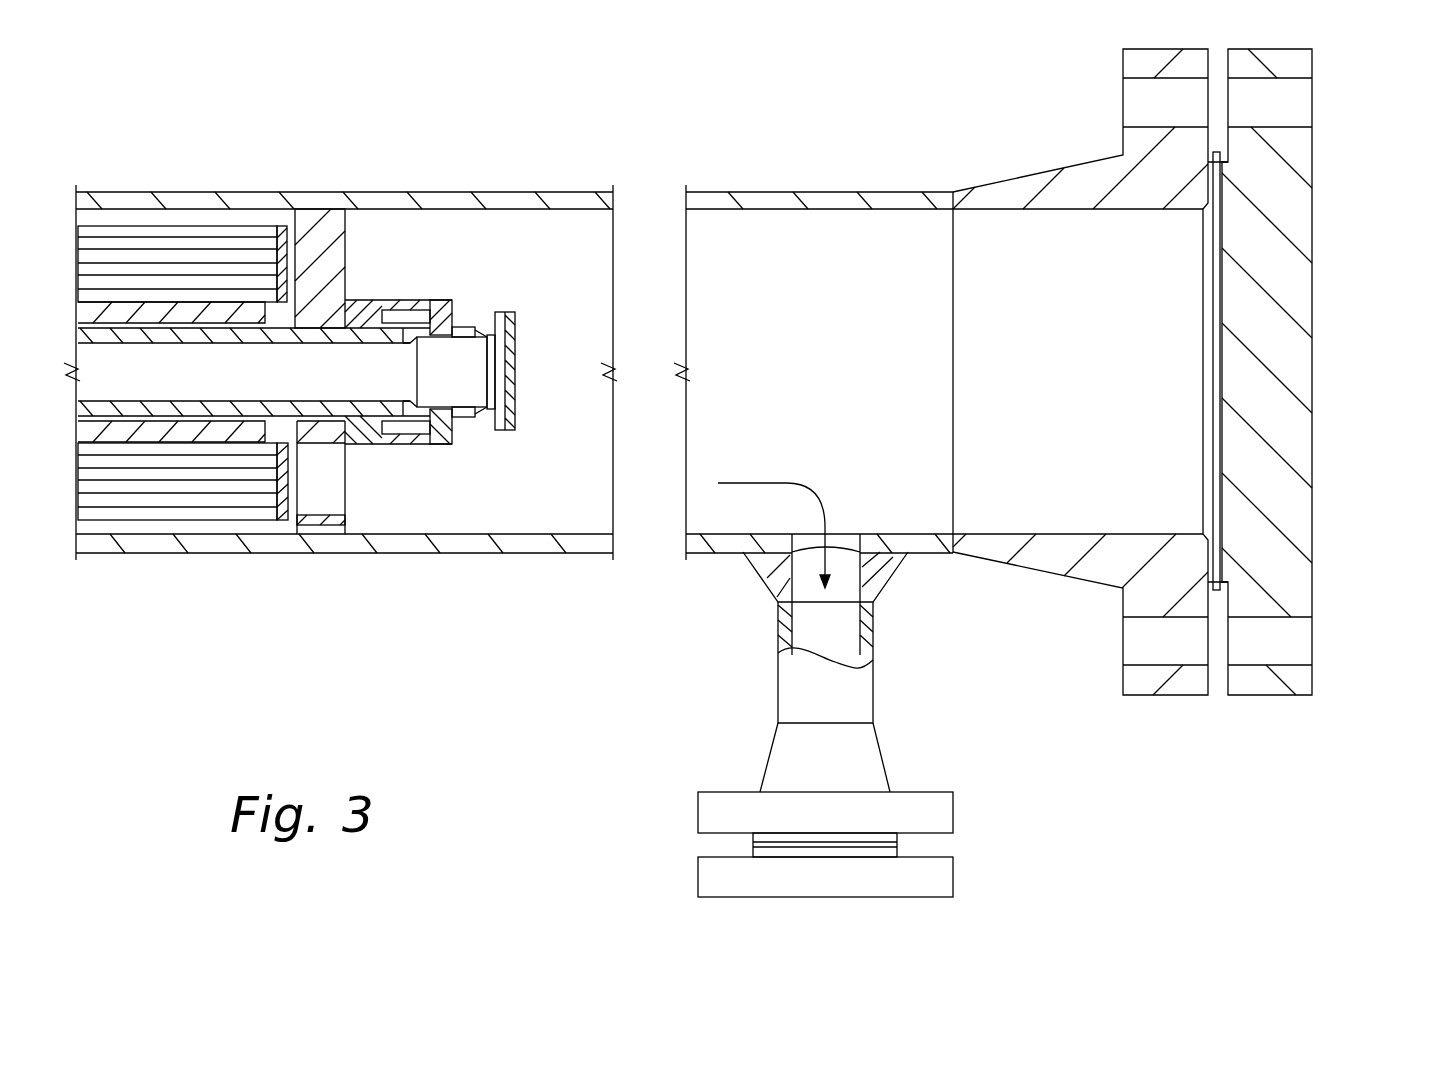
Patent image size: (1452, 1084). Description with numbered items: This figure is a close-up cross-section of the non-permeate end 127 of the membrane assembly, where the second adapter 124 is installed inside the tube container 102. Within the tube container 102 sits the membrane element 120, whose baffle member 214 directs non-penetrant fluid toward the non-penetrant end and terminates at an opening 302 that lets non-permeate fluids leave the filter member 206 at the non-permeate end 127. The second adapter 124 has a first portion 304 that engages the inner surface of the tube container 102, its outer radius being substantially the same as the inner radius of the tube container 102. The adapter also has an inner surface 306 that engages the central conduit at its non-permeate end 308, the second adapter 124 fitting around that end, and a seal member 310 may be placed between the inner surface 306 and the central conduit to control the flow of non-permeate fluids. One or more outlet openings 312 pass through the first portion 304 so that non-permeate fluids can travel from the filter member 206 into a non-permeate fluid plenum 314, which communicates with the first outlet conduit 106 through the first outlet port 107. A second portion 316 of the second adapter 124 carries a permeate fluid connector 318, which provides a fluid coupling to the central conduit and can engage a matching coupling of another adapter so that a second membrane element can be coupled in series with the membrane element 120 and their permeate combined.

The tube container 102 is at (441, 192).
The membrane element 120 is at (125, 226).
The baffle member 214 is at (176, 226).
The opening 302 is at (281, 282).
The first portion 304 is at (318, 209).
The outlet openings 312 is at (320, 497).
The second adapter 124 is at (368, 300).
The second portion 316 is at (420, 300).
The permeate fluid connector 318 is at (443, 300).
The inner surface 306 is at (368, 407).
The non-permeate end 308 is at (397, 407).
The seal member 310 is at (392, 402).
The non-permeate fluid plenum 314 is at (583, 385).
The filter member 206 is at (158, 508).
The non-permeate end 127 is at (1345, 163).
The first outlet port 107 is at (812, 632).
The first outlet conduit 106 is at (822, 898).